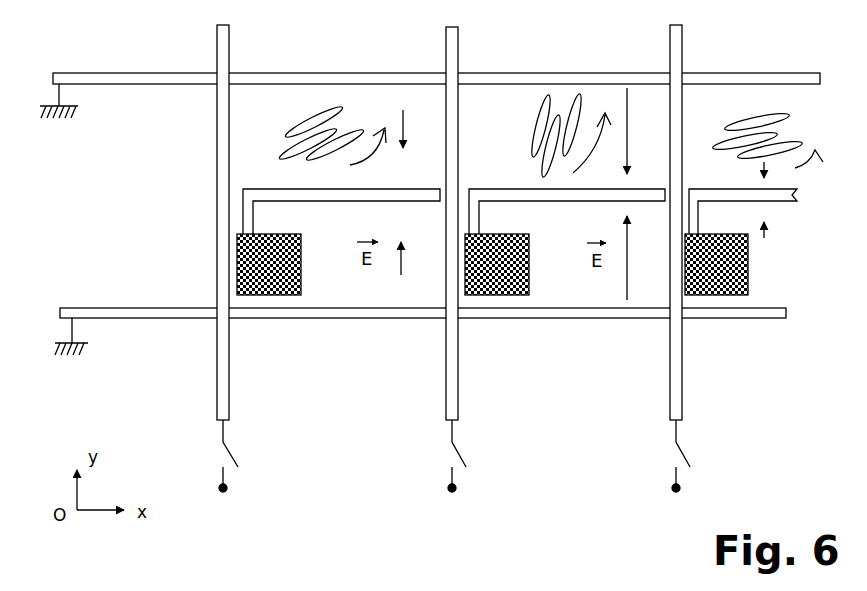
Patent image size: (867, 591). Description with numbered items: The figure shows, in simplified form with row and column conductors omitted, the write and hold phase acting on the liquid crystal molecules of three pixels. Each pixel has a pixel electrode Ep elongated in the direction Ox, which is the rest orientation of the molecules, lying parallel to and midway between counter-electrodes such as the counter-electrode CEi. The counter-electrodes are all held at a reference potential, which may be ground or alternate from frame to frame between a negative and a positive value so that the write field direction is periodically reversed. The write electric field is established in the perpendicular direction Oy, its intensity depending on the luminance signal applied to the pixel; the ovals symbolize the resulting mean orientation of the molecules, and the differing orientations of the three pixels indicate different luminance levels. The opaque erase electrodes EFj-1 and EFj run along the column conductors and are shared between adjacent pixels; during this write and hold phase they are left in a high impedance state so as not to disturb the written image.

The erase electrode EFj-1 is at (226, 57).
The erase electrode EFj is at (452, 57).
The pixel electrode Ep is at (575, 195).
The counter-electrode CEi is at (594, 313).